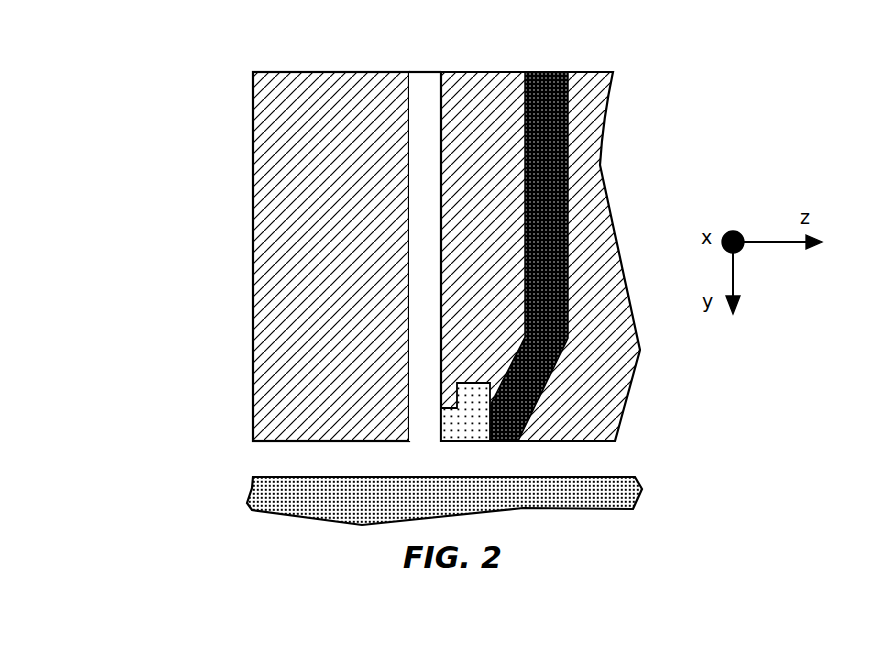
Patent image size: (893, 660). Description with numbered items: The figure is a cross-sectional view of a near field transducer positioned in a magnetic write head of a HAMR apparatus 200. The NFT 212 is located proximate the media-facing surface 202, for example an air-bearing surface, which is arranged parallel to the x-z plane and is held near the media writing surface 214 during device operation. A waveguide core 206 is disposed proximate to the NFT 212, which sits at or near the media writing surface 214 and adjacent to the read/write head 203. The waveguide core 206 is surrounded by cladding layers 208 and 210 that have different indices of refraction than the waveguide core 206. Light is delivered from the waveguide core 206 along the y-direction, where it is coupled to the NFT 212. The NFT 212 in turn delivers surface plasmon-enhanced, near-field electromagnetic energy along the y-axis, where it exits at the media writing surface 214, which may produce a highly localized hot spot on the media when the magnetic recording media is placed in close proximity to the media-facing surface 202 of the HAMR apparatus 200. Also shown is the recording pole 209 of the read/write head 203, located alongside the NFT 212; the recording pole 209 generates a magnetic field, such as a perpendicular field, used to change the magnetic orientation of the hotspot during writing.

The HAMR apparatus 200 is at (160, 66).
The media-facing surface 202 is at (278, 443).
The read/write head 203 is at (470, 441).
The waveguide core 206 is at (423, 250).
The cladding layer 208 is at (260, 108).
The recording pole 209 is at (545, 72).
The cladding layer 210 is at (475, 72).
The near field transducer 212 is at (449, 441).
The media writing surface 214 is at (603, 471).